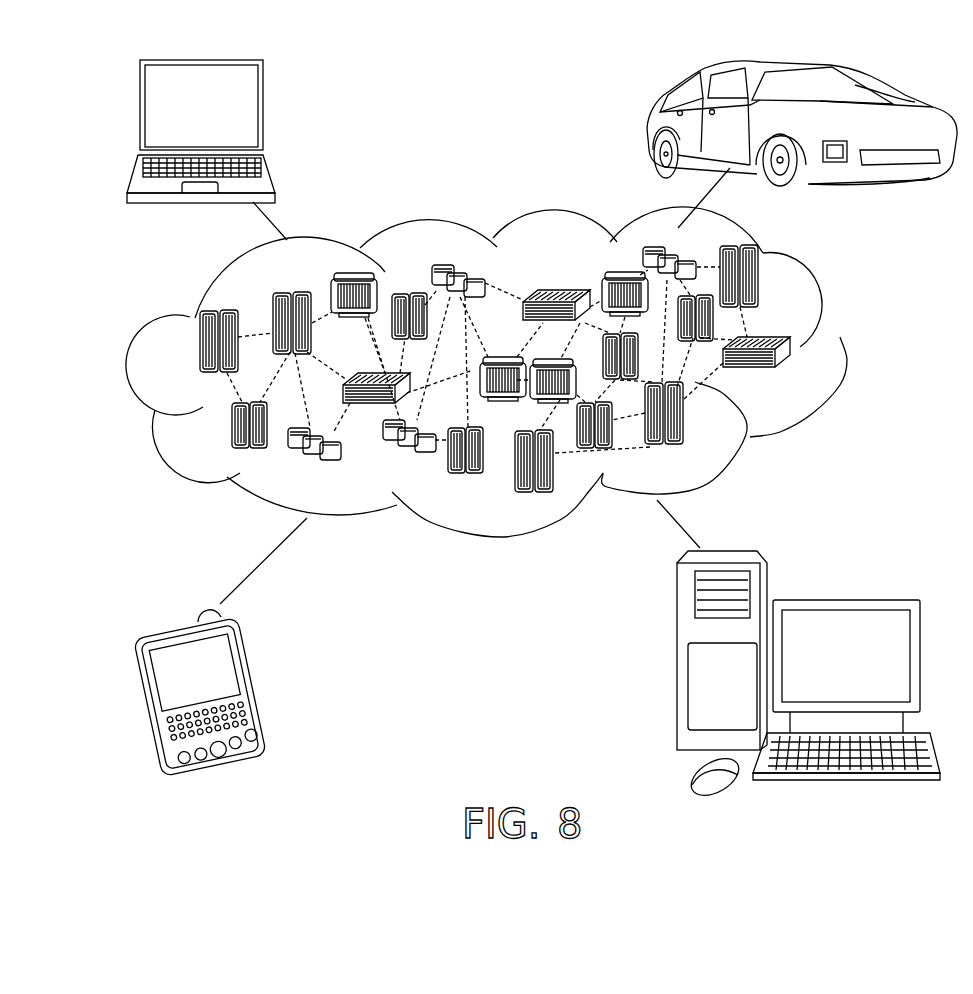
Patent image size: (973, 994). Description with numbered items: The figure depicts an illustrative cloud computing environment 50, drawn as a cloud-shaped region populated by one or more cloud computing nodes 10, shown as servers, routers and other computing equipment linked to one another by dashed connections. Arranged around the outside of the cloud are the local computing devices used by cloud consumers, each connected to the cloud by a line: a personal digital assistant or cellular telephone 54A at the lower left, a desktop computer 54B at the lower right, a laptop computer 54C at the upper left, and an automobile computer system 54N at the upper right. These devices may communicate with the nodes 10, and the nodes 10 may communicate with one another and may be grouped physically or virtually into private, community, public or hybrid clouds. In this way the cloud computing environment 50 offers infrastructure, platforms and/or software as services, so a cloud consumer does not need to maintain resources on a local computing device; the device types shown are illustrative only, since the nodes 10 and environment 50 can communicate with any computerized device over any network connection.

The cloud computing nodes 10 is at (795, 377).
The cloud computing environment 50 is at (847, 351).
The personal digital assistant or cellular telephone 54A is at (257, 680).
The desktop computer 54B is at (845, 600).
The laptop computer 54C is at (263, 112).
The automobile computer system 54N is at (652, 127).